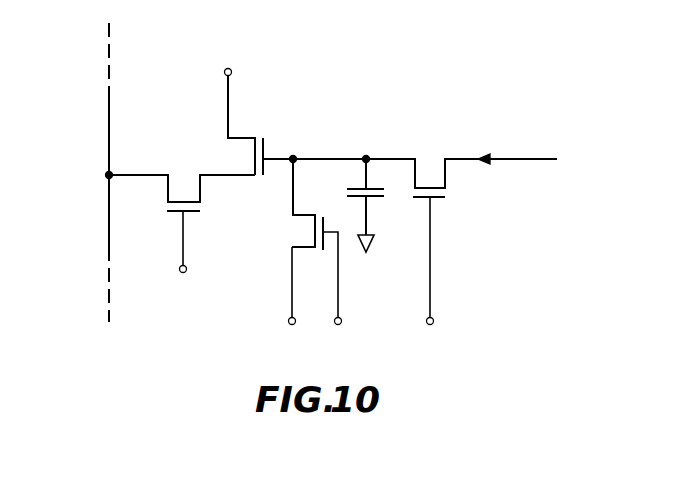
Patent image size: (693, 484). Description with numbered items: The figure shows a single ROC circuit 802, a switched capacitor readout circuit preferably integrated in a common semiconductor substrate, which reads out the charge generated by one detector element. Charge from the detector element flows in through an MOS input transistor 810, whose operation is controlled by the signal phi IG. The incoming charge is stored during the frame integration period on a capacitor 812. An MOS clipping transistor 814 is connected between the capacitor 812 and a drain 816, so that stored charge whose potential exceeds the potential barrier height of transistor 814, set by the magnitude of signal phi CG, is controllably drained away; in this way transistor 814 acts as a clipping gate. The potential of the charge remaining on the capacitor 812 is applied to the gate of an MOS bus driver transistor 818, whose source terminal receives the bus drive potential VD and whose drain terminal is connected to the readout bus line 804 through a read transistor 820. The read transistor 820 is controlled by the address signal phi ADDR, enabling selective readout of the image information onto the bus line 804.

The ROC circuit 802 is at (436, 82).
The readout bus line 804 is at (109, 142).
The MOS input transistor 810 is at (450, 176).
The capacitor 812 is at (377, 198).
The MOS clipping transistor 814 is at (315, 214).
The drain 816 is at (289, 318).
The MOS bus driver transistor 818 is at (254, 138).
The read transistor 820 is at (200, 193).